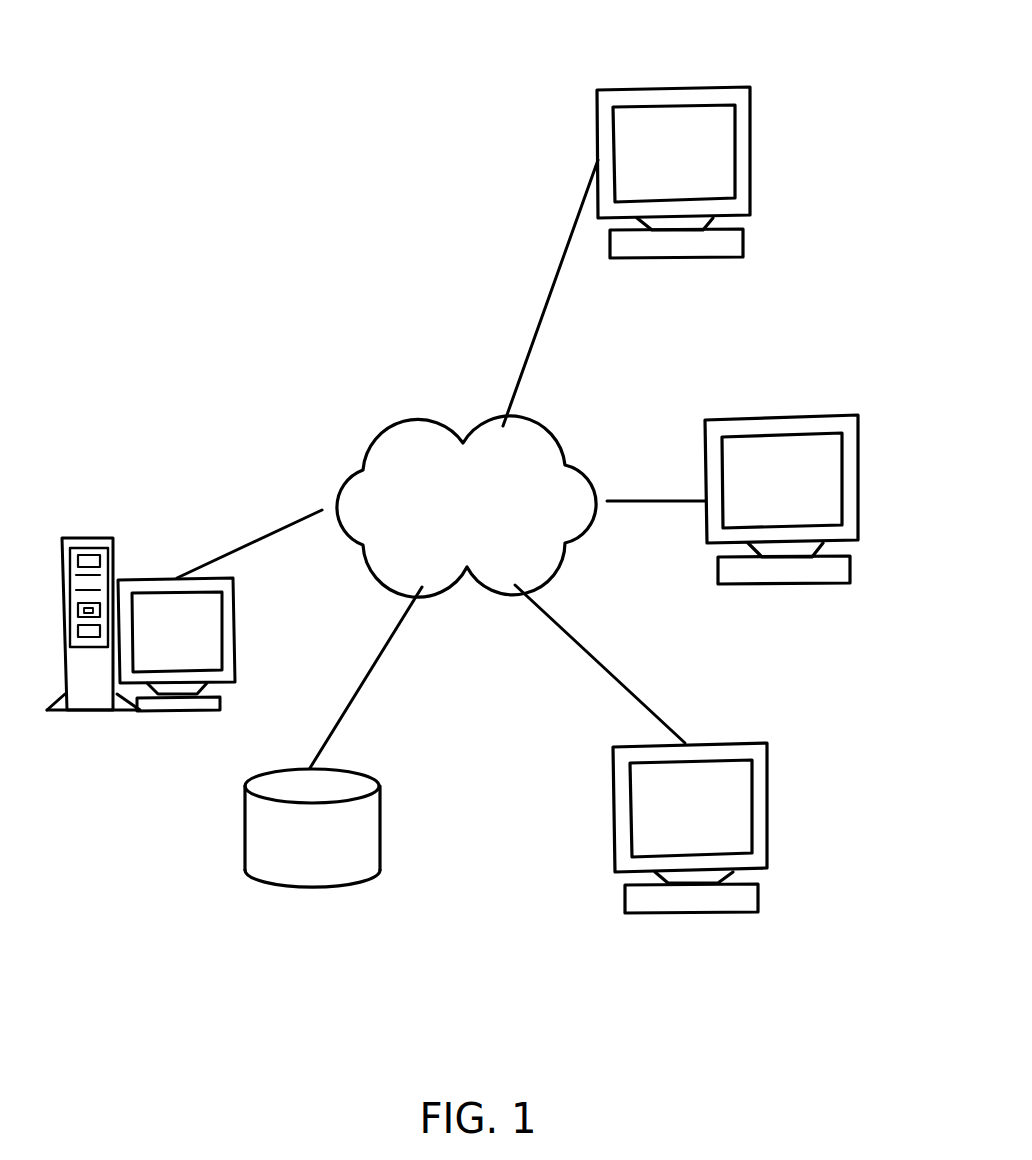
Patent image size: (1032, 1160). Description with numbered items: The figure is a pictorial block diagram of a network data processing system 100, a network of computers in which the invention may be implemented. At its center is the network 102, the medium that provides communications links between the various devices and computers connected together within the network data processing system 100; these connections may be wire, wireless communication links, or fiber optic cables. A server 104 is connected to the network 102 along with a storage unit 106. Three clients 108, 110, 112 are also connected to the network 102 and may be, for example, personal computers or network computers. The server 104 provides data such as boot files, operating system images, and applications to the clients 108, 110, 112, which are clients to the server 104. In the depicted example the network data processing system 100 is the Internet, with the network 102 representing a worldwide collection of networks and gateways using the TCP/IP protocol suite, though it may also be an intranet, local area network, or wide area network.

The network data processing system 100 is at (516, 832).
The network 102 is at (413, 442).
The server 104 is at (147, 587).
The storage unit 106 is at (288, 873).
The client 108 is at (647, 98).
The client 110 is at (755, 425).
The client 112 is at (742, 902).